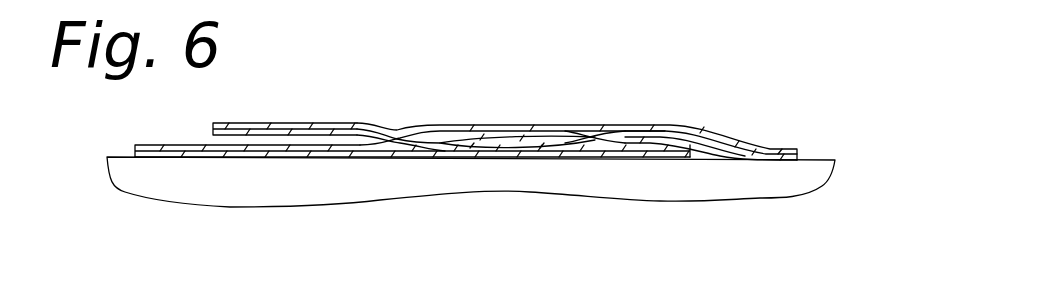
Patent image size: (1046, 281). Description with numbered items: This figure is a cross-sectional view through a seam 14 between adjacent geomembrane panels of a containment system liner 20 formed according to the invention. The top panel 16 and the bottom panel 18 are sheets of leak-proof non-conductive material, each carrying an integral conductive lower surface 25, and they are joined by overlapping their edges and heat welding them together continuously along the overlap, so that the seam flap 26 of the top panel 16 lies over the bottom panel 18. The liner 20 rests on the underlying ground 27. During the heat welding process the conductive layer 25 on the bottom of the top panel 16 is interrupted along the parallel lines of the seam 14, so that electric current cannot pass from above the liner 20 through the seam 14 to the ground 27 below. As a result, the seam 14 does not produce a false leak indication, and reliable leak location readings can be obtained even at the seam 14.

The liner 20 is at (717, 65).
The seam 14 is at (411, 128).
The top panel 16 is at (523, 125).
The bottom panel 18 is at (140, 145).
The conductive lower surface 25 is at (478, 158).
The seam flap 26 is at (243, 123).
The ground 27 is at (275, 197).